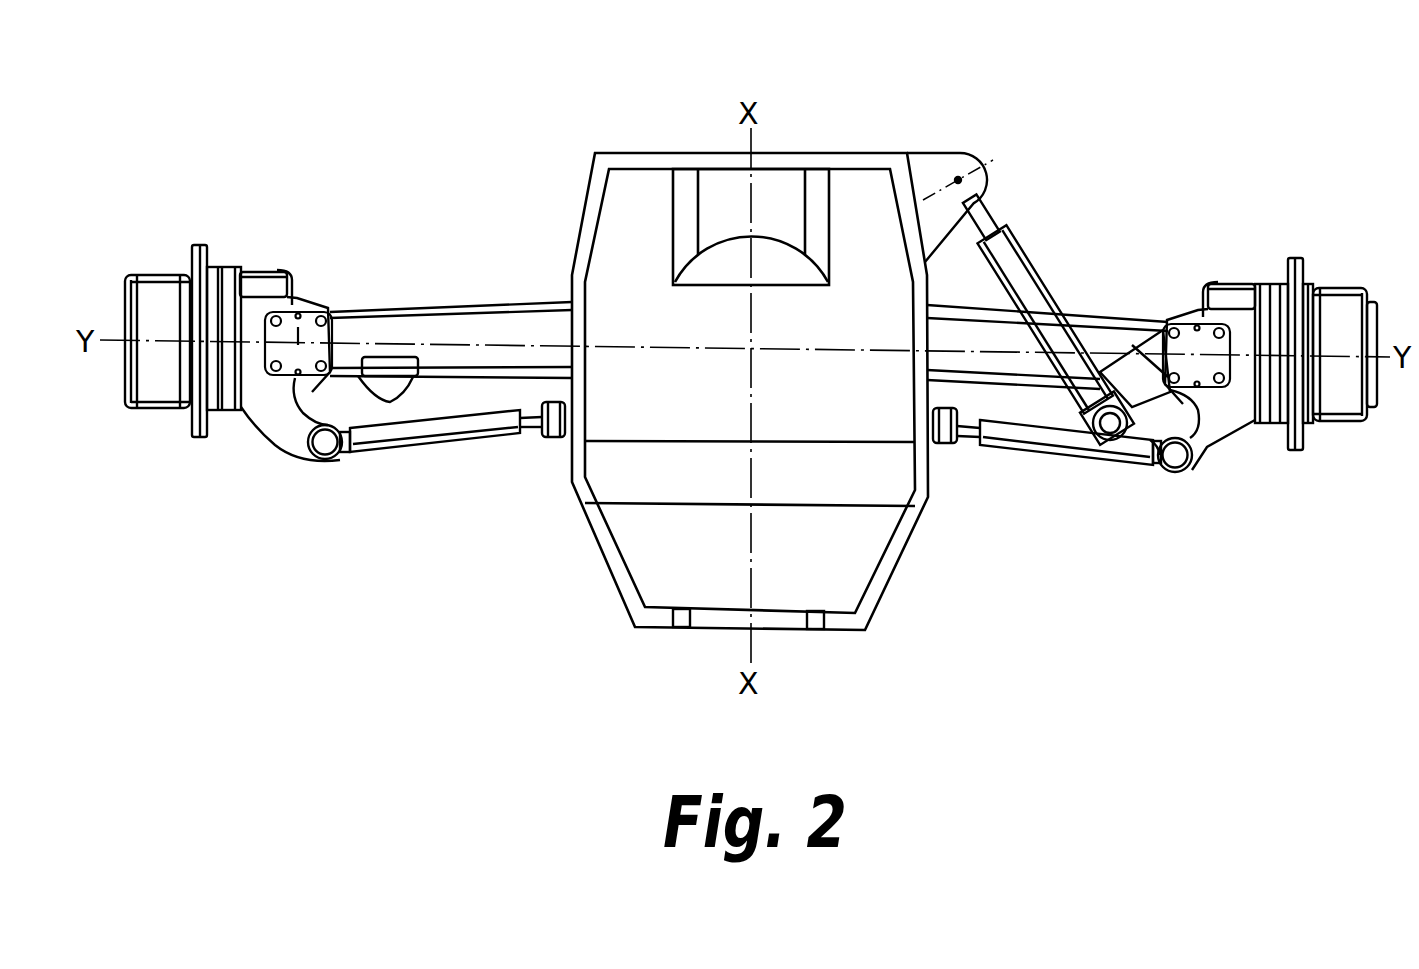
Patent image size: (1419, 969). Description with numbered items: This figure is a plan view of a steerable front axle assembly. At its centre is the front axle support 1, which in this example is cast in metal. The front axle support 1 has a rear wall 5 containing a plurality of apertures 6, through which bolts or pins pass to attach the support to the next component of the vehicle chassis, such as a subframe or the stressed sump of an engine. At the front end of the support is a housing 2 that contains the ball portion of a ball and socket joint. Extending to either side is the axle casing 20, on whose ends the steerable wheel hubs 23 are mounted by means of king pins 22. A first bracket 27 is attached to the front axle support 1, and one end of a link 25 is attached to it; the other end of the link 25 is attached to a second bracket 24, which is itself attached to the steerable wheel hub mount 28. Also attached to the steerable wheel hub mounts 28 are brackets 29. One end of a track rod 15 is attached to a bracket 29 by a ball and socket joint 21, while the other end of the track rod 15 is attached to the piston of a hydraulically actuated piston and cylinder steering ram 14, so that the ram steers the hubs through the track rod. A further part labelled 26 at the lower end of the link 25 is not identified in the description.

The front axle support 1 is at (610, 575).
The housing 2 is at (828, 208).
The rear wall 5 is at (763, 629).
The apertures 6 is at (683, 628).
The hydraulically actuated piston and cylinder steering ram 14 is at (548, 446).
The track rod 15 is at (418, 446).
The axle casing 20 is at (443, 285).
The ball and socket joint 21 is at (323, 462).
The king pins 22 is at (298, 337).
The steerable wheel hubs 23 is at (155, 392).
The second bracket 24 is at (1131, 370).
The link 25 is at (1037, 266).
The cylinder ball joint 26 is at (1110, 440).
The first bracket 27 is at (963, 176).
The steerable wheel hub mount 28 is at (250, 272).
The brackets 29 is at (292, 432).